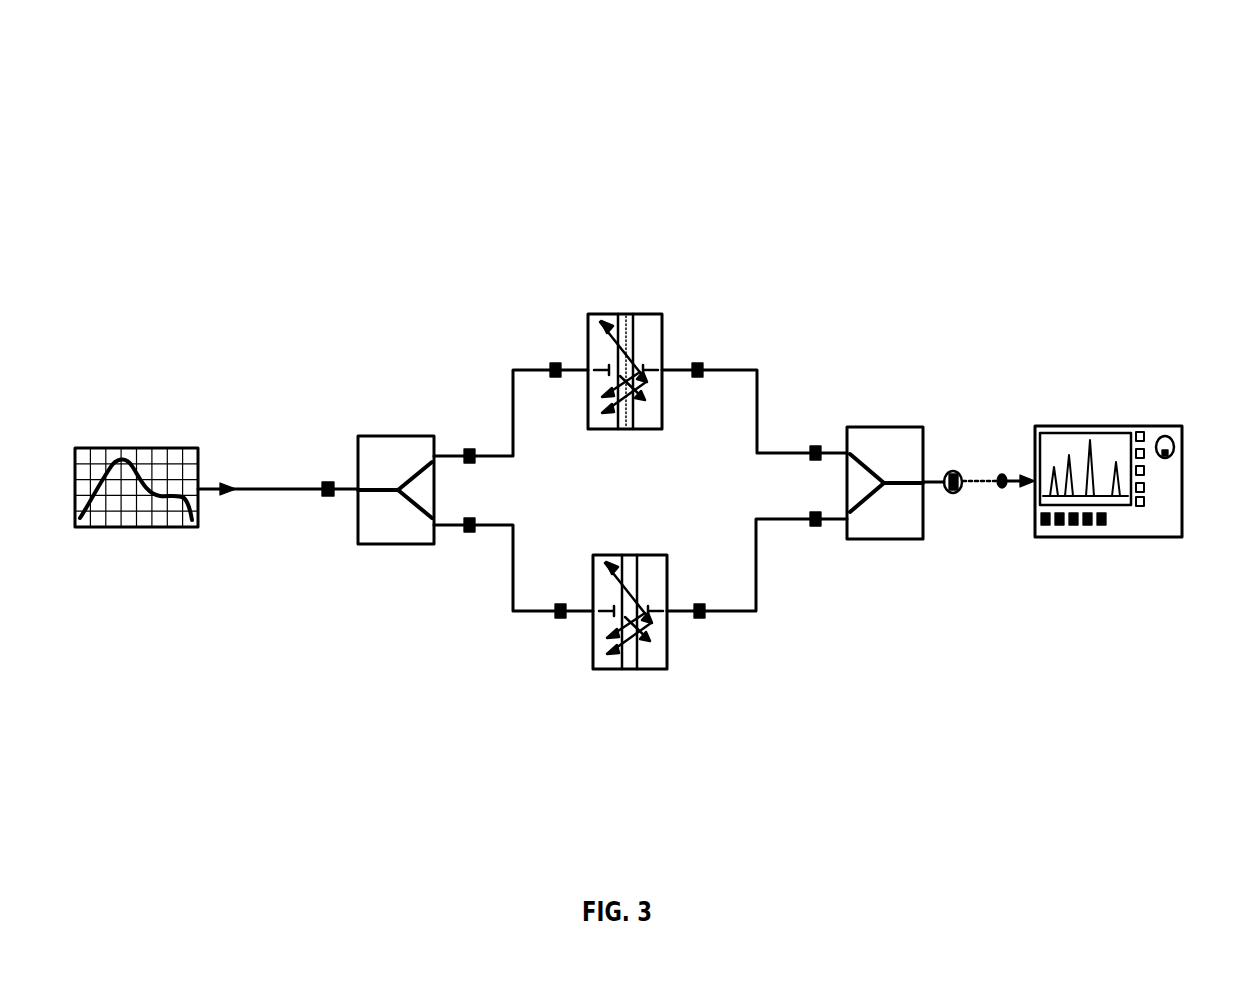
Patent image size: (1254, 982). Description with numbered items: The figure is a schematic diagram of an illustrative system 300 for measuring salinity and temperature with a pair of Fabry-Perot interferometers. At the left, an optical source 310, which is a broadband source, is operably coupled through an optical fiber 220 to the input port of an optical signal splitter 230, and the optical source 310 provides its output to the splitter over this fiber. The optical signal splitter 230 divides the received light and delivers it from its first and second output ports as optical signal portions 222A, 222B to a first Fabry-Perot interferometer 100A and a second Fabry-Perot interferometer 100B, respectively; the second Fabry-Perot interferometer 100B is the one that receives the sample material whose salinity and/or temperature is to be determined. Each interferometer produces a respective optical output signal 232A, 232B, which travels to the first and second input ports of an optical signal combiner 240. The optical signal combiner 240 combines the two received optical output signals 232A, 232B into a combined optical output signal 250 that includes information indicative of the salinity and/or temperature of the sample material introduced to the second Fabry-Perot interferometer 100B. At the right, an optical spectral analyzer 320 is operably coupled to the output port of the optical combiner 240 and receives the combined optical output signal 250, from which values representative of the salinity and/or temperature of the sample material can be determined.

The system 300 is at (1162, 66).
The optical source 310 is at (138, 530).
The optical fiber 220 is at (281, 488).
The optical signal splitter 230 is at (388, 547).
The optical signal portion to first Fabry-Perot interferometer 222A is at (514, 617).
The optical signal portion to second Fabry-Perot interferometer 222B is at (524, 371).
The first Fabry-Perot interferometer 100A is at (638, 676).
The second Fabry-Perot interferometer 100B is at (624, 436).
The optical output signal 232A is at (755, 617).
The optical output signal 232B is at (751, 371).
The optical signal combiner 240 is at (888, 543).
The combined optical output signal 250 is at (981, 478).
The optical spectral analyzer 320 is at (1118, 540).